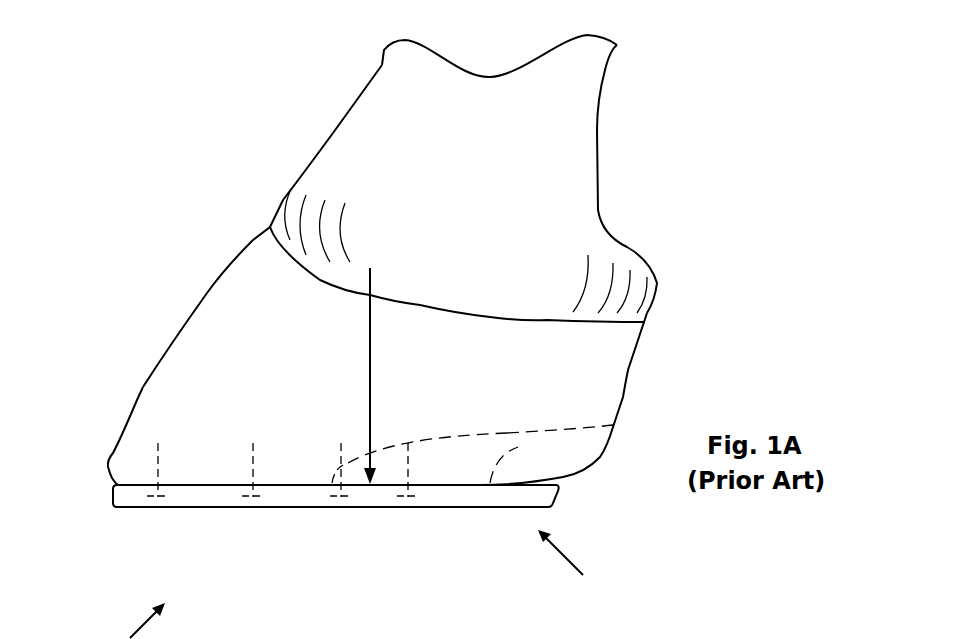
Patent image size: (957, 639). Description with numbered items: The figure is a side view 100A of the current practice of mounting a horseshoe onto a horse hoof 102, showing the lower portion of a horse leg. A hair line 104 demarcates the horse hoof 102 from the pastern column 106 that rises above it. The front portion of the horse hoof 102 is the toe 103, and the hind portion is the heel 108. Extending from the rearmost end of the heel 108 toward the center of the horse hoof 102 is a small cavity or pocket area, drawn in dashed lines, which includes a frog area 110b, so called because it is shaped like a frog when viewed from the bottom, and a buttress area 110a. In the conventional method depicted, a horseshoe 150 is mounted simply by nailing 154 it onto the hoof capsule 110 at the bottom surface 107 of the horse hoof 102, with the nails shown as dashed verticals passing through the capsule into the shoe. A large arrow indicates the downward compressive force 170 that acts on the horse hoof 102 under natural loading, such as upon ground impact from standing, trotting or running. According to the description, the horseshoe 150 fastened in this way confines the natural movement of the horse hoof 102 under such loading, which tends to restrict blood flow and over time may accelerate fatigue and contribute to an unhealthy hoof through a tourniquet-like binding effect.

The side view 100A is at (127, 75).
The horse hoof 102 is at (180, 313).
The toe 103 is at (108, 467).
The hair line 104 is at (413, 300).
The pastern column 106 is at (360, 82).
The bottom surface 107 is at (583, 563).
The heel 108 is at (628, 397).
The hoof capsule 110 is at (272, 486).
The buttress area 110a is at (580, 464).
The frog area 110b is at (467, 470).
The horseshoe 150 is at (220, 507).
The nailing 154 is at (407, 437).
The downward compressive force 170 is at (370, 362).